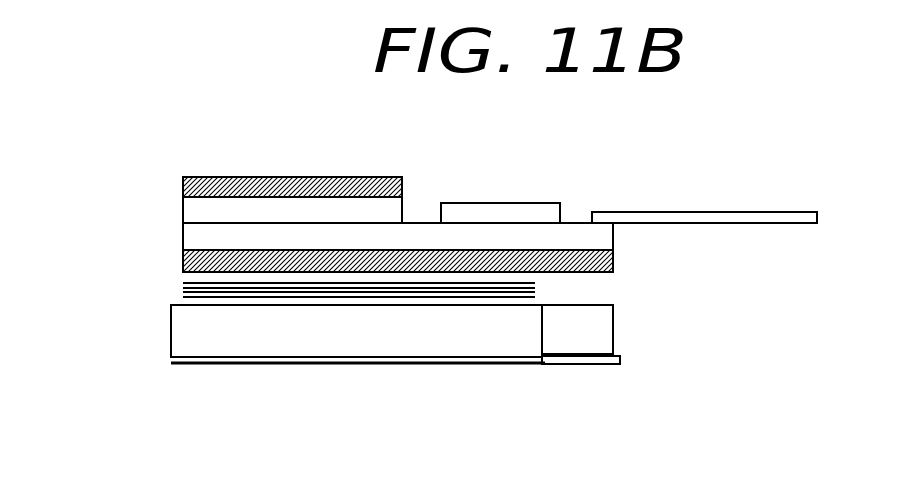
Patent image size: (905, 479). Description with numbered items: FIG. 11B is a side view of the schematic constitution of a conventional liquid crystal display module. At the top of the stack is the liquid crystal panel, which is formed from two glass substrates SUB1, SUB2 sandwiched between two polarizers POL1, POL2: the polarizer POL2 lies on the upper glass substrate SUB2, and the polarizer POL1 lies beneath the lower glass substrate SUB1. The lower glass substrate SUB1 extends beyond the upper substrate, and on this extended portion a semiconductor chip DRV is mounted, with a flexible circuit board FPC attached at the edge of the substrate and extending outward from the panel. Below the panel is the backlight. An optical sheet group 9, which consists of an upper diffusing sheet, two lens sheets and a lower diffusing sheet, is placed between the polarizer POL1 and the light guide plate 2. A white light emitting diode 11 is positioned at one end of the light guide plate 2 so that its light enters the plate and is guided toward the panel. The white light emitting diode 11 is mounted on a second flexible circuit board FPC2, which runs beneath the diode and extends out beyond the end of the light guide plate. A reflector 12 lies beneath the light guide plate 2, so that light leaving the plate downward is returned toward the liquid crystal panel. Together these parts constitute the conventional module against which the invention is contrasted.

The polarizer POL2 is at (184, 189).
The glass substrate SUB2 is at (184, 210).
The glass substrate SUB1 is at (184, 240).
The polarizer POL1 is at (184, 262).
The semiconductor chip DRV is at (497, 207).
The flexible circuit board FPC is at (772, 211).
The optical sheet group 9 is at (542, 290).
The light guide plate 2 is at (461, 340).
The white light emitting diode 11 is at (595, 338).
The reflector 12 is at (313, 367).
The flexible circuit board FPC2 is at (621, 364).